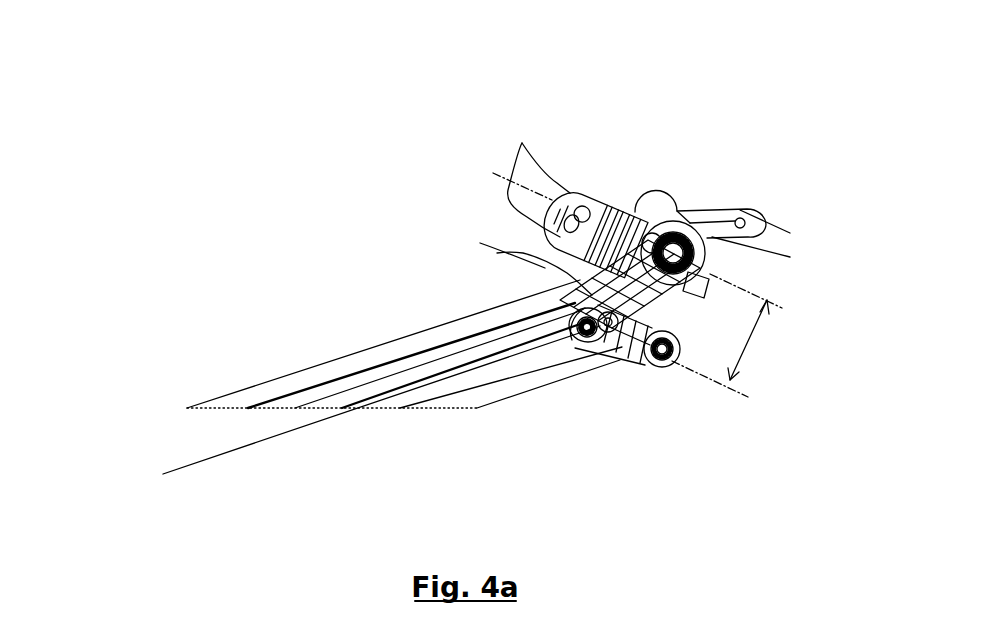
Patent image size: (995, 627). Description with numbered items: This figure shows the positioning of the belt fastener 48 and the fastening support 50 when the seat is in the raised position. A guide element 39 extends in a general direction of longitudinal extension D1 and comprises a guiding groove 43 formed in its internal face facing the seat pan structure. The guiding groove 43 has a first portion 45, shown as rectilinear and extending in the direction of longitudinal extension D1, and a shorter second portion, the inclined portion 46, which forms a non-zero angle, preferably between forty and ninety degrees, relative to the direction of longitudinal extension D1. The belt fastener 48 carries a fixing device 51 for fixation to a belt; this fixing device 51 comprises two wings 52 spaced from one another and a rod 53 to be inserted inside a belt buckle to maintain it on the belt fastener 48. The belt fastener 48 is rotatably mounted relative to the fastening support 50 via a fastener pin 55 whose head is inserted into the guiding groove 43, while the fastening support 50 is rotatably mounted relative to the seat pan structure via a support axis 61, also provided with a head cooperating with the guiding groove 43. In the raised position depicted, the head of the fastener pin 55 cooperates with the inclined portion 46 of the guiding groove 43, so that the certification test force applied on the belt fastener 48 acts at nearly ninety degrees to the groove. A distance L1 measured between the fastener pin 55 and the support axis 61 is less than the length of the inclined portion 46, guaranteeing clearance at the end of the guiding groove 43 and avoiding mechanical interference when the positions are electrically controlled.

The guide element 39 is at (351, 358).
The guiding groove 43 is at (402, 376).
The first portion 45 is at (324, 330).
The inclined portion 46 is at (474, 206).
The belt fastener 48 is at (641, 203).
The fastening support 50 is at (660, 317).
The fixing device 51 is at (590, 180).
The wings 52 is at (522, 143).
The rod 53 is at (598, 203).
The fastener pin 55 is at (720, 200).
The support axis 61 is at (653, 375).
The general direction of longitudinal extension D1 is at (192, 464).
The distance L1 is at (752, 338).